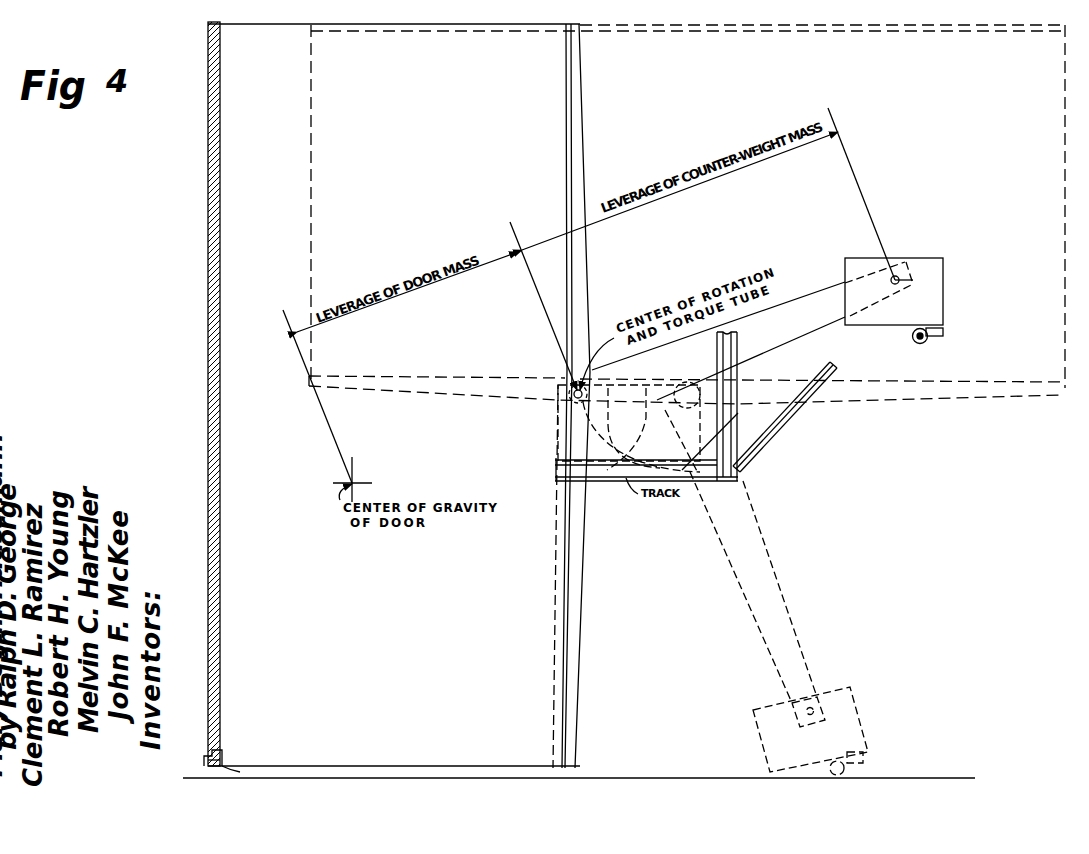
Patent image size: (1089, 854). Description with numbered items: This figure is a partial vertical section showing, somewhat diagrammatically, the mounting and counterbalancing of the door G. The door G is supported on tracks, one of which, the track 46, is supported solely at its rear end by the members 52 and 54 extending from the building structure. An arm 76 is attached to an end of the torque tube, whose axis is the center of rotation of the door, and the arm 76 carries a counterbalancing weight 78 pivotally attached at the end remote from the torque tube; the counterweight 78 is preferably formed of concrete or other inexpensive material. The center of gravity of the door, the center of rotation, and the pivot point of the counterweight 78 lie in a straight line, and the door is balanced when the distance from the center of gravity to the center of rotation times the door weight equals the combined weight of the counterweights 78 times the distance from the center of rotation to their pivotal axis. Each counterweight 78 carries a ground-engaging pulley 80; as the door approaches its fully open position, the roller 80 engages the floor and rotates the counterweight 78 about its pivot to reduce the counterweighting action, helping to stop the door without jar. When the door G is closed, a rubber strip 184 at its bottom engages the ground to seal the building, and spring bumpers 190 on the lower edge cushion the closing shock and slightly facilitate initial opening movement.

The door G is at (208, 243).
The track 46 is at (632, 480).
The member 52 is at (737, 427).
The member 54 is at (788, 420).
The arm 76 is at (824, 298).
The counterbalancing weight 78 is at (943, 287).
The ground-engaging pulley 80 is at (927, 341).
The strip 184 is at (204, 772).
The spring bumpers 190 is at (232, 773).